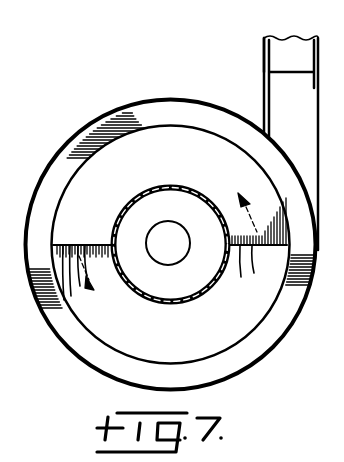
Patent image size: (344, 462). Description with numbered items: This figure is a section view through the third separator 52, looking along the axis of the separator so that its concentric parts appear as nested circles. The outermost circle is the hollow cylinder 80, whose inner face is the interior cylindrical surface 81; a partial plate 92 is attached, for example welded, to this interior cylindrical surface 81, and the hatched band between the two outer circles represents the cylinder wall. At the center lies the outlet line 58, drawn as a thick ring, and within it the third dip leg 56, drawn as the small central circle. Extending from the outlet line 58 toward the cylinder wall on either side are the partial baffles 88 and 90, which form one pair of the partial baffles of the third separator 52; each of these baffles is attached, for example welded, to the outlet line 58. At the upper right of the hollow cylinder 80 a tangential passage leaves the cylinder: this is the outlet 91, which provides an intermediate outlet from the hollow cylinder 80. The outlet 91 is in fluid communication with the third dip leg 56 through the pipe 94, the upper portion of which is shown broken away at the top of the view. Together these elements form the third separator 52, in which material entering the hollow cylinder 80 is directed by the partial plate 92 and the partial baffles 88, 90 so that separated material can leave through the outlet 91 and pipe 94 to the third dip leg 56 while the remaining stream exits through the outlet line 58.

The third separator 52 is at (274, 347).
The third dip leg 56 is at (150, 257).
The outlet line 58 is at (191, 186).
The hollow cylinder 80 is at (67, 346).
The interior cylindrical surface 81 is at (47, 310).
The partial baffle 88 is at (254, 250).
The partial baffle 90 is at (83, 244).
The outlet 91 is at (265, 100).
The partial plate 92 is at (68, 152).
The pipe 94 is at (263, 42).